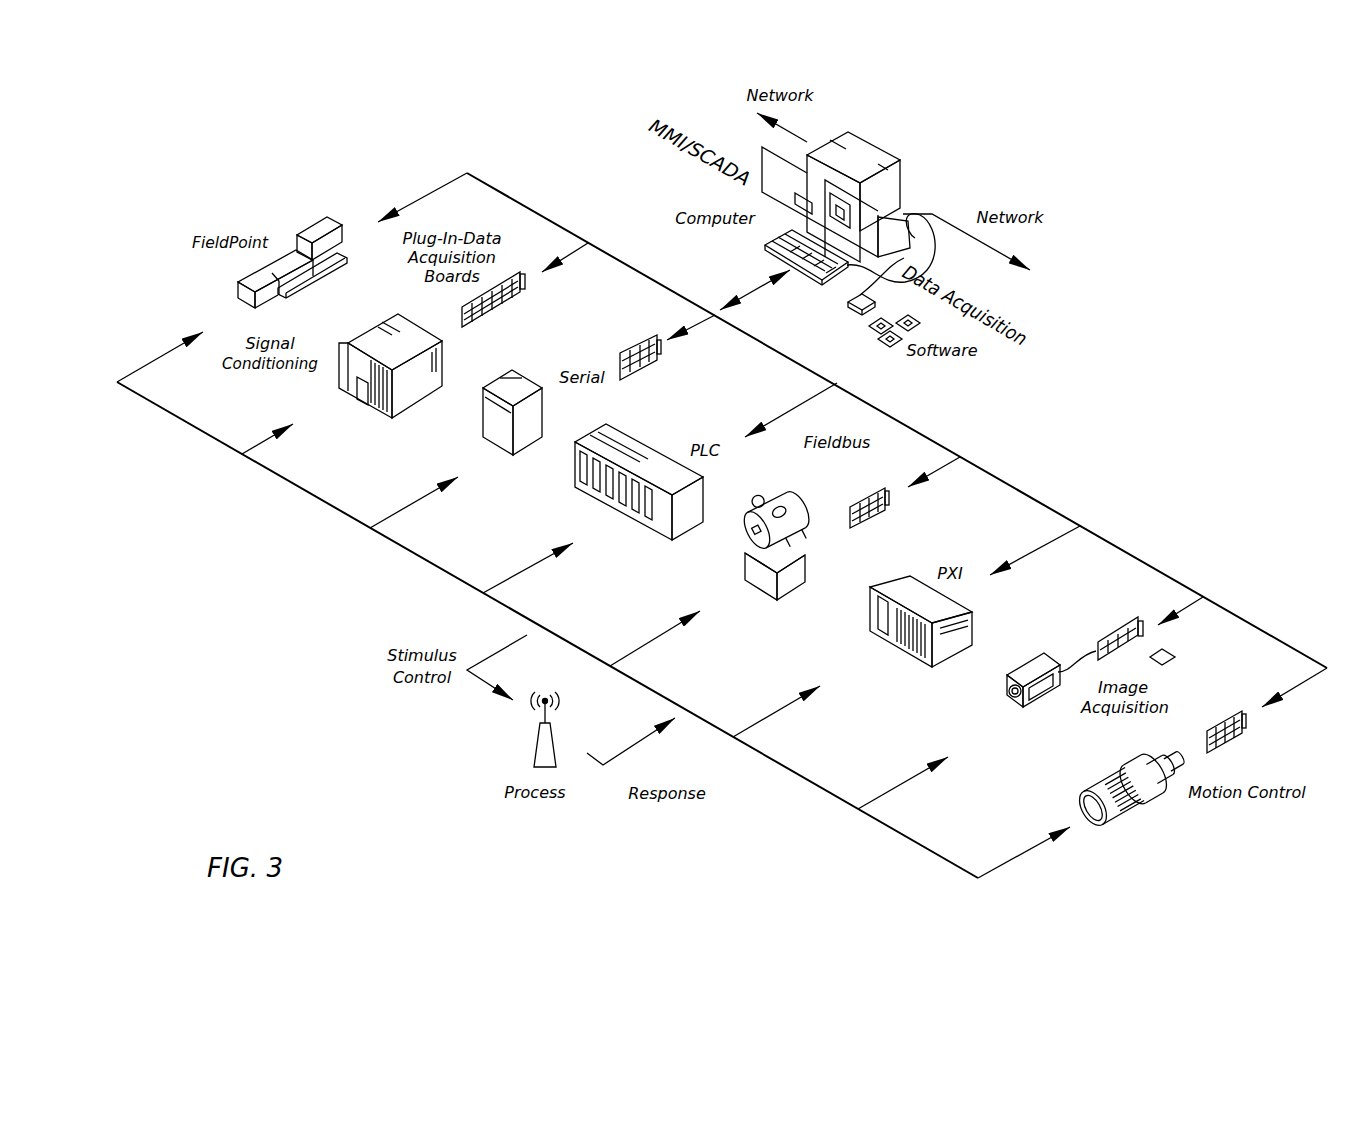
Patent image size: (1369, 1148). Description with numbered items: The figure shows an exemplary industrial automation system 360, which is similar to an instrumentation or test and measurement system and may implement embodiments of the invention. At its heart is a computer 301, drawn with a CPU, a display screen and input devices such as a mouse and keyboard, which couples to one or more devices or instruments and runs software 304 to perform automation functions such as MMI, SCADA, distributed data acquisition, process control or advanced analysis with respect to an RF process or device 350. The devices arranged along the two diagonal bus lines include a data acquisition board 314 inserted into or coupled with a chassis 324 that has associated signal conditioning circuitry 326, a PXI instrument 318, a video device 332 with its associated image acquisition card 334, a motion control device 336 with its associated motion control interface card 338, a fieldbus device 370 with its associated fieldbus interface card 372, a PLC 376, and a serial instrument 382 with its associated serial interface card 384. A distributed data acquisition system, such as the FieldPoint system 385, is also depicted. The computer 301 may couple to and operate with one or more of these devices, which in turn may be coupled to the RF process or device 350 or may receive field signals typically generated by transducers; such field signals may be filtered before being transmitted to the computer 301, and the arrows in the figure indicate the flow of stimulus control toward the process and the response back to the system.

The computer 301 is at (882, 149).
The software 304 is at (893, 350).
The data acquisition board 314 is at (510, 307).
The PXI instrument 318 is at (905, 653).
The chassis 324 is at (366, 336).
The signal conditioning circuitry 326 is at (365, 396).
The video device 332 is at (1013, 708).
The image acquisition card 334 is at (1110, 632).
The motion control device 336 is at (1133, 812).
The motion control interface card 338 is at (1227, 742).
The RF process or device 350 is at (533, 753).
The industrial automation system 360 is at (1110, 288).
The fieldbus device 370 is at (763, 595).
The fieldbus interface card 372 is at (862, 493).
The PLC 376 is at (657, 448).
The serial instrument 382 is at (498, 448).
The serial interface card 384 is at (635, 348).
The FieldPoint system 385 is at (312, 226).